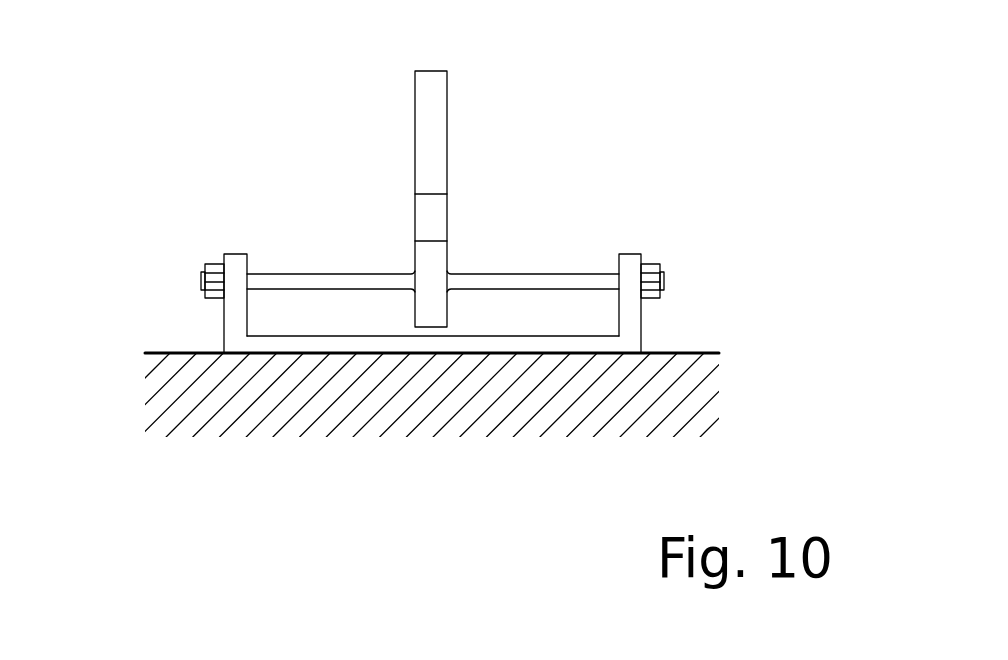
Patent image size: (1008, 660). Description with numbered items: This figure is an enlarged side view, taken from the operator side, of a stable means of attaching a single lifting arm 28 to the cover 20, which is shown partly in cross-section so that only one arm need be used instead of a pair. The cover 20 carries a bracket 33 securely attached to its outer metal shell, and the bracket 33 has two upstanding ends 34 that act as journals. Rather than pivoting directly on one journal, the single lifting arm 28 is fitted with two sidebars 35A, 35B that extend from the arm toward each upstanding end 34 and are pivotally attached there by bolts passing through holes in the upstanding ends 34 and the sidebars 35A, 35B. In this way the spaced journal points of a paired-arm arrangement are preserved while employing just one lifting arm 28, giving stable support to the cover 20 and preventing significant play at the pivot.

The cover 20 is at (170, 352).
The lifting arm 28 is at (439, 97).
The bracket 33 is at (633, 317).
The upstanding ends 34 is at (237, 262).
The sidebar 35A is at (263, 280).
The sidebar 35B is at (505, 275).